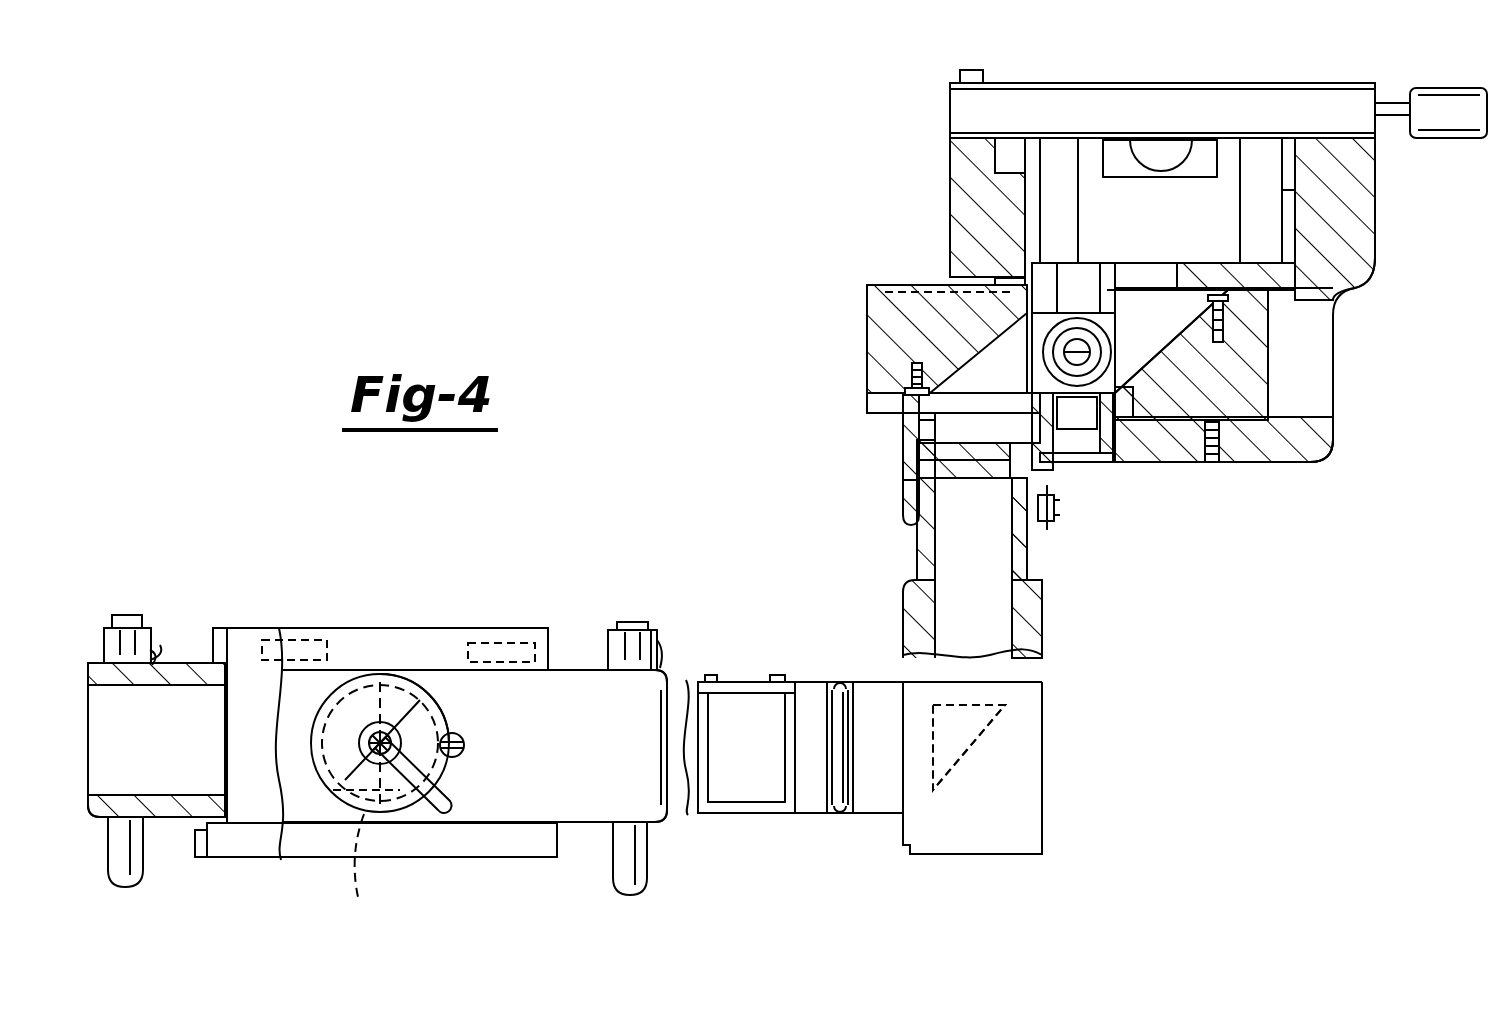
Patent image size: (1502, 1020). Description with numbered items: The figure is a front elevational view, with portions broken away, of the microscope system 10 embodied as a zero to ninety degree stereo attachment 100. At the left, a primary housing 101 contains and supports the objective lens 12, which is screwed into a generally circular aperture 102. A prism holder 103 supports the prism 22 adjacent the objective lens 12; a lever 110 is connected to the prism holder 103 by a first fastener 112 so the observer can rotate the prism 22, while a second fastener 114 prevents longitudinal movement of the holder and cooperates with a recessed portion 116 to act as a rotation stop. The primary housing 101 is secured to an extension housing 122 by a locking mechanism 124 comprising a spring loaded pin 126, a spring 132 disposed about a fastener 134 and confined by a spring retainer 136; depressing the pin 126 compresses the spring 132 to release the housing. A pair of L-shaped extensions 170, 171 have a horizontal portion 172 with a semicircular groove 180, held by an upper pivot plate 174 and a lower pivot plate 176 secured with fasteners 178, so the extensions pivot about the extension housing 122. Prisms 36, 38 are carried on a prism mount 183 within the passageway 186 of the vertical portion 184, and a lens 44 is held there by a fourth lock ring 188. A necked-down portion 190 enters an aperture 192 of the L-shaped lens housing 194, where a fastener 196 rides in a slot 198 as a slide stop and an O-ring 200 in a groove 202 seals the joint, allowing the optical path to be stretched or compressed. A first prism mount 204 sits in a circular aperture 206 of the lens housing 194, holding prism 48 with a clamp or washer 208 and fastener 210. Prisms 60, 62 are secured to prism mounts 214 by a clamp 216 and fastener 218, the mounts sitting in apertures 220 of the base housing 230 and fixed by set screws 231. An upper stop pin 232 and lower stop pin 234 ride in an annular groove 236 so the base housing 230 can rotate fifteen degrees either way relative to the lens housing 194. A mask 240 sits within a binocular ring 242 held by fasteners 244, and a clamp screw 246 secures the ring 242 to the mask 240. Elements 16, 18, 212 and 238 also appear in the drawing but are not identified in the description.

The microscope system 10 is at (660, 166).
The objective lens 12 is at (242, 848).
The hidden contact 16 is at (306, 640).
The hidden contact 18 is at (526, 642).
The prism 22 is at (378, 857).
The prism 36 is at (968, 755).
The prism 38 is at (969, 747).
The lens 44 is at (906, 486).
The prism 48 is at (918, 296).
The prism 60 is at (1224, 439).
The prism 62 is at (1214, 445).
The stereo attachment 100 is at (578, 668).
The primary housing 101 is at (214, 640).
The circular aperture 102 is at (234, 640).
The prism holder 103 is at (354, 670).
The lever 110 is at (445, 799).
The first fastener 112 is at (392, 676).
The second fastener 114 is at (465, 746).
The recessed portion 116 is at (440, 703).
The extension housing 122 is at (741, 778).
The locking mechanism 124 is at (107, 640).
The spring loaded pin 126 is at (148, 882).
The spring 132 is at (160, 652).
The fastener 134 is at (128, 628).
The spring retainer 136 is at (156, 672).
The L-shaped extension 170 is at (1044, 622).
The L-shaped extension 171 is at (1019, 529).
The horizontal portion 172 is at (838, 812).
The upper pivot plate 174 is at (728, 682).
The lower pivot plate 176 is at (812, 812).
The fasteners 178 is at (773, 700).
The semicircular groove 180 is at (843, 686).
The prism mount 183 is at (975, 852).
The vertical portion 184 is at (1028, 642).
The passageway 186 is at (915, 568).
The fourth lock ring 188 is at (915, 455).
The necked-down portion 190 is at (1028, 565).
The aperture 192 is at (913, 425).
The lens housing 194 is at (917, 440).
The fastener 196 is at (1054, 515).
The slot 198 is at (1012, 535).
The O-ring 200 is at (910, 508).
The groove 202 is at (1050, 488).
The first prism mount 204 is at (870, 318).
The circular aperture 206 is at (996, 283).
The clamp or washer 208 is at (1095, 220).
The fastener 210 is at (1010, 318).
The screw 212 is at (880, 363).
The prism mount 214 is at (1250, 360).
The clamp 216 is at (1210, 325).
The fastener 218 is at (1220, 298).
The aperture 220 is at (1353, 289).
The base housing 230 is at (1360, 210).
The set screw 231 is at (1218, 463).
The upper stop pin 232 is at (1090, 268).
The lower stop pin 234 is at (1083, 424).
The annular groove 236 is at (1080, 267).
The plate 238 is at (1045, 470).
The mask 240 is at (1094, 84).
The binocular ring 242 is at (965, 110).
The fasteners 244 is at (978, 72).
The clamp screw 246 is at (1452, 100).